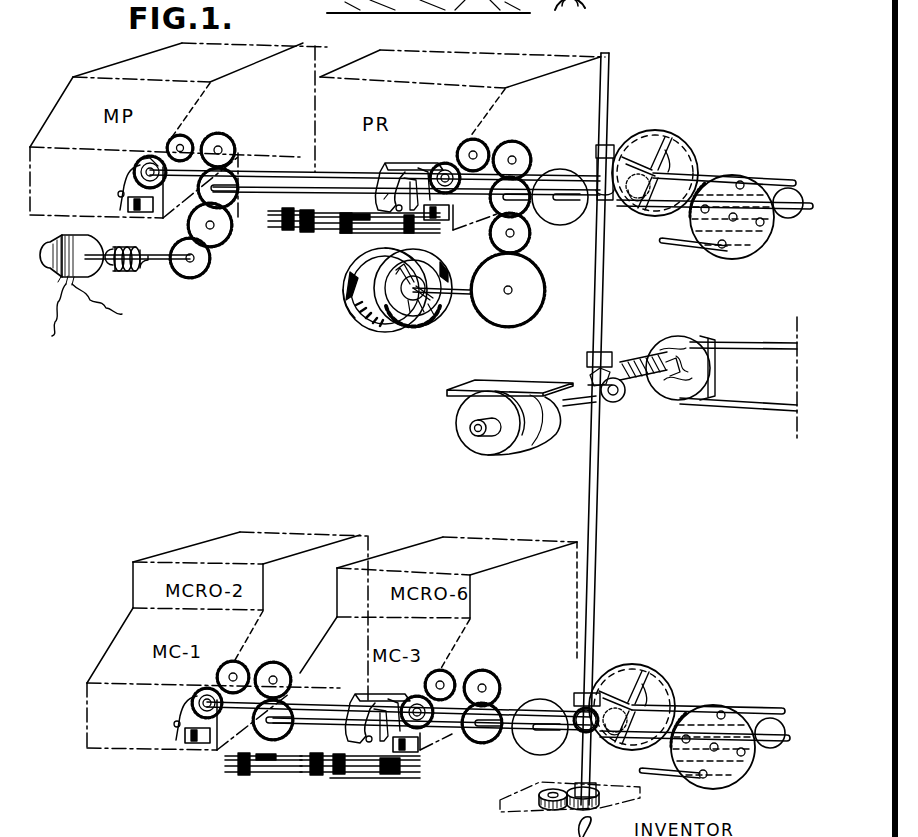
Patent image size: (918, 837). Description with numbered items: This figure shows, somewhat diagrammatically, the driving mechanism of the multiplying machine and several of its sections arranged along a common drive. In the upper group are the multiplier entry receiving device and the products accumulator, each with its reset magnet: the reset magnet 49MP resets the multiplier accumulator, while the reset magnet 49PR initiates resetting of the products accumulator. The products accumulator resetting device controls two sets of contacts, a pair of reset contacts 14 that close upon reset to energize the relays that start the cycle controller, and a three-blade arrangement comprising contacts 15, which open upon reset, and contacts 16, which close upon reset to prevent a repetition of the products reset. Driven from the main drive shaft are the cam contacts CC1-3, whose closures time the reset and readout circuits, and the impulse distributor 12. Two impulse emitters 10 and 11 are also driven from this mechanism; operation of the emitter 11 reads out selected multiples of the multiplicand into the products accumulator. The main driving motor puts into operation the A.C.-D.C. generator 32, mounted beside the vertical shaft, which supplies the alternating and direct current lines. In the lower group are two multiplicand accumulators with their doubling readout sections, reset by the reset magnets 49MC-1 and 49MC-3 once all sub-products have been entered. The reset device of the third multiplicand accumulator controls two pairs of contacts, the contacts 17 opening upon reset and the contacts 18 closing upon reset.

The impulse distributor 12 is at (53, 243).
The reset magnet for the multiplier accumulator 49MP is at (138, 212).
The cam contacts CC1-3 is at (150, 267).
The reset contacts 15 is at (320, 222).
The reset contacts 16 is at (324, 226).
The reset contacts 14 is at (358, 230).
The reset magnet for the PR accumulator 49PR is at (454, 229).
The impulse emitter 11 is at (358, 323).
The impulse emitter 10 is at (416, 329).
The A.C.-D.C. generator 32 is at (490, 445).
The reset magnet for the MC-1 multiplicand accumulator 49MC-1 is at (194, 744).
The reset magnet for the MC-3 multiplicand accumulator 49MC-3 is at (413, 745).
The multiplicand reset contacts 17 is at (293, 765).
The multiplicand reset contacts 18 is at (330, 767).